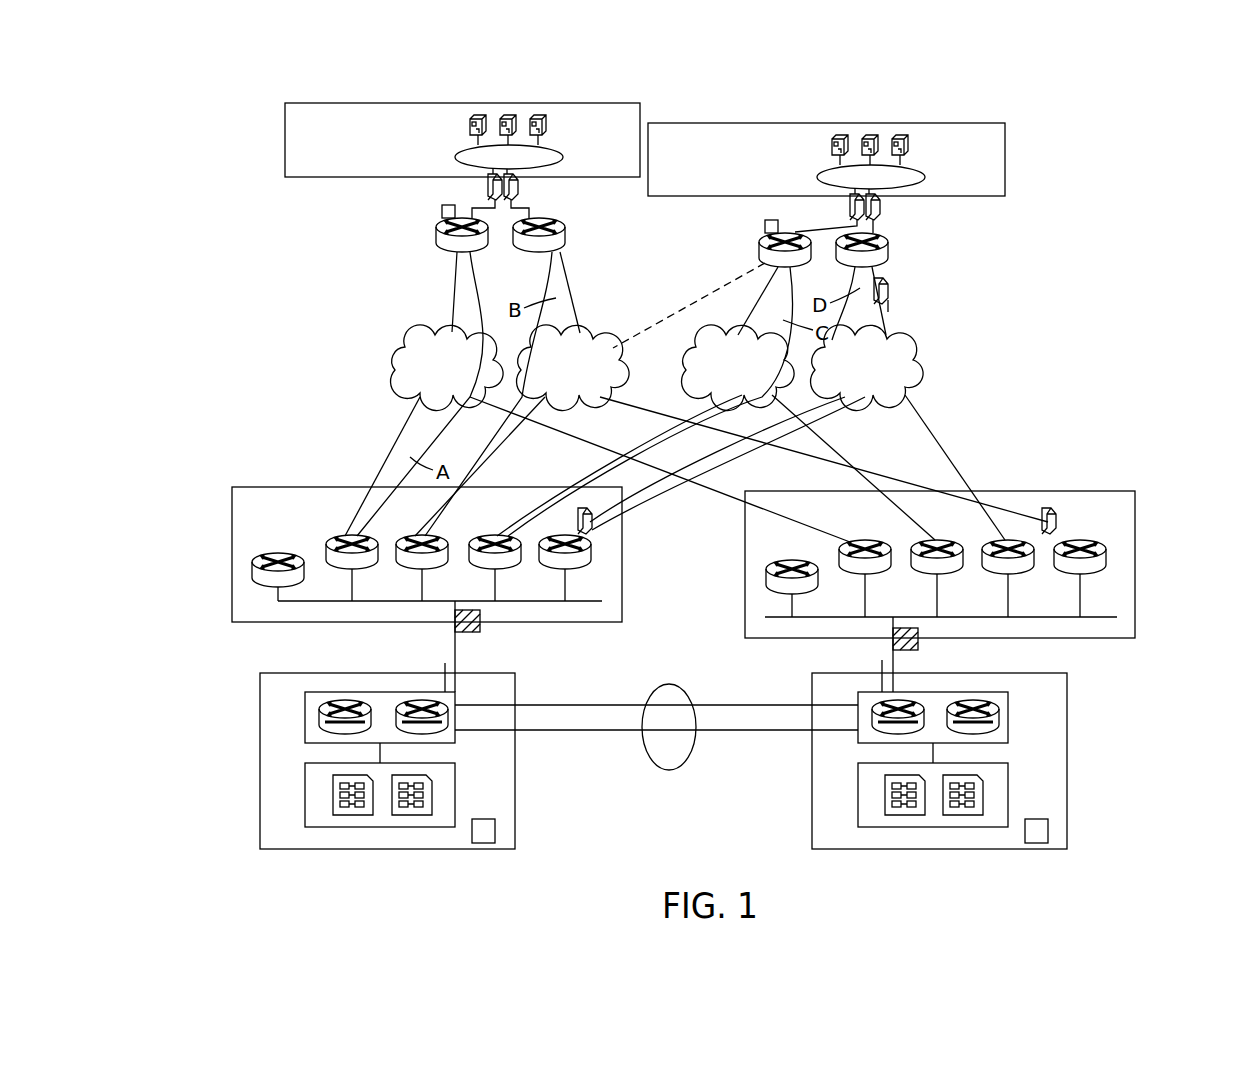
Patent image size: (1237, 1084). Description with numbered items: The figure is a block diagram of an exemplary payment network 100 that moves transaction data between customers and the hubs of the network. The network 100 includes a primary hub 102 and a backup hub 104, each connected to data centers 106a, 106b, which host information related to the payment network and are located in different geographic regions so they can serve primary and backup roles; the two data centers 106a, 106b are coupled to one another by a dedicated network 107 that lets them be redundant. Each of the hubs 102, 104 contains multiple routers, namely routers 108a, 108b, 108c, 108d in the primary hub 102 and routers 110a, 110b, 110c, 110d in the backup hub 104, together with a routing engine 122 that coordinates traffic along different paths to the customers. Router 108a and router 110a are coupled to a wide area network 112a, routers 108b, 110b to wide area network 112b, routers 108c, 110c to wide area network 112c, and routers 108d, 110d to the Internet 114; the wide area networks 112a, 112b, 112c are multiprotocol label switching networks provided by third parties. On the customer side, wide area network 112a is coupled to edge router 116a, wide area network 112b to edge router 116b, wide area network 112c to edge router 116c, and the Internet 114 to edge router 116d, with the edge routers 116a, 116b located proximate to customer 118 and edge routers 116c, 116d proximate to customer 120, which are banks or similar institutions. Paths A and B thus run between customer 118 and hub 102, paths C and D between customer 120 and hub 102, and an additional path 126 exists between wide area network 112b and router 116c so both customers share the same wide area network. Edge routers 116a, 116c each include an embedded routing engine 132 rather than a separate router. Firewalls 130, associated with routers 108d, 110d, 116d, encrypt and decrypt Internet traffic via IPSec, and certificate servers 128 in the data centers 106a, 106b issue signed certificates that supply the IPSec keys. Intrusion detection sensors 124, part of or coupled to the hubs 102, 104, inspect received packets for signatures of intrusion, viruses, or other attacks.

The network 100 is at (1118, 179).
The primary hub 102 is at (461, 573).
The backup hub 104 is at (785, 565).
The data center 106a is at (515, 790).
The data center 106b is at (1067, 790).
The dedicated network 107 is at (669, 770).
The router 108a is at (340, 536).
The router 108b is at (418, 536).
The router 108c is at (492, 536).
The router 108d is at (548, 548).
The router 110a is at (878, 574).
The router 110b is at (950, 574).
The router 110c is at (1022, 574).
The router 110d is at (1092, 574).
The wide area network 112a is at (397, 366).
The wide area network 112b is at (576, 397).
The wide area network 112c is at (688, 374).
The Internet 114 is at (915, 368).
The edge router 116a is at (437, 243).
The edge router 116b is at (565, 240).
The edge router 116c is at (757, 247).
The edge router 116d is at (890, 248).
The customer 118 is at (285, 140).
The customer 120 is at (1005, 160).
The routing engine 122 is at (270, 555).
The intrusion detection sensor 124 is at (480, 627).
The additional path 126 is at (660, 318).
The certificate server 128 is at (495, 831).
The firewall 130 is at (889, 290).
The routing engine 132 is at (442, 211).